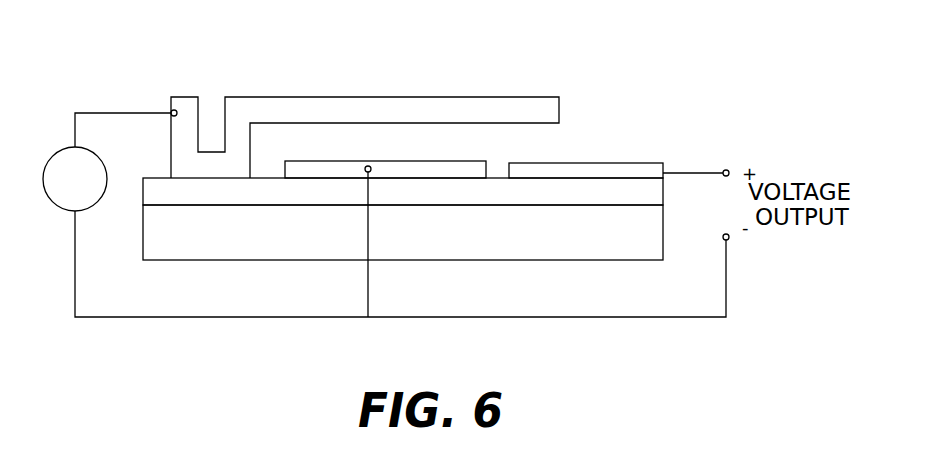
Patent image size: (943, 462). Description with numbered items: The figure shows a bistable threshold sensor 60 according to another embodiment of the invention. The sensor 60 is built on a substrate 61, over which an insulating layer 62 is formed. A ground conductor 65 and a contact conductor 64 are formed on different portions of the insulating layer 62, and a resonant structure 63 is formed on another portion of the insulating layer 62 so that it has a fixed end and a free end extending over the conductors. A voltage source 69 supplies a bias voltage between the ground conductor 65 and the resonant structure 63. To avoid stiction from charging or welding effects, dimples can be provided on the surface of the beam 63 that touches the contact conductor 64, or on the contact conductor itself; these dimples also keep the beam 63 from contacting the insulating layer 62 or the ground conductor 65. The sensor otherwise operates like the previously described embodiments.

The sensor 60 is at (348, 68).
The substrate 61 is at (143, 250).
The insulating layer 62 is at (143, 212).
The resonant structure 63 is at (525, 97).
The contact conductor 64 is at (590, 163).
The ground conductor 65 is at (313, 161).
The voltage source 69 is at (63, 148).